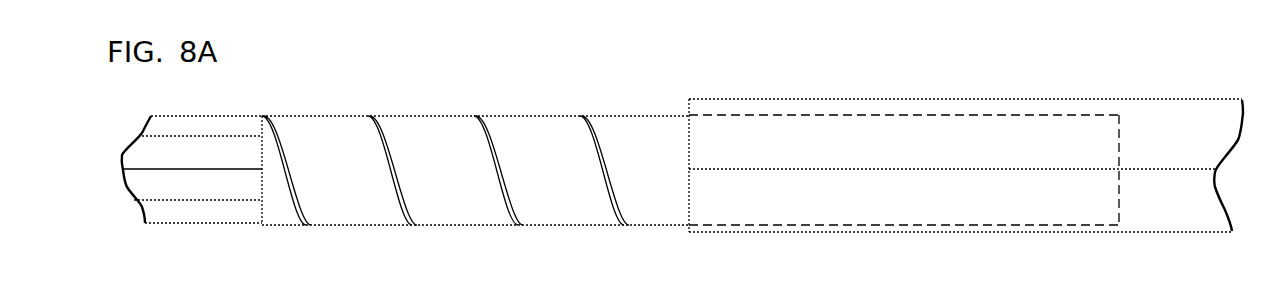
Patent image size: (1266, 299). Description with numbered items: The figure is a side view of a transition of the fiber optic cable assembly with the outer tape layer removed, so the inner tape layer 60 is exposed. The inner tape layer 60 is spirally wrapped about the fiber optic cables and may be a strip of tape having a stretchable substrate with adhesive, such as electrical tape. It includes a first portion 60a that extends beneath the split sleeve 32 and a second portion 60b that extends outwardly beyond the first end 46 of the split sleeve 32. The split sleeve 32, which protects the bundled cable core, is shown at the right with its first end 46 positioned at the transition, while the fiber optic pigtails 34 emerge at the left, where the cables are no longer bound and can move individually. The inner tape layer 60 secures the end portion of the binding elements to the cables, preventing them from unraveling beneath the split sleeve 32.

The split sleeve 32 is at (1139, 99).
The fiber optic pigtails 34 is at (202, 223).
The first end 46 is at (688, 104).
The inner tape layer 60 is at (475, 163).
The first portion 60a is at (801, 226).
The second portion 60b is at (546, 227).